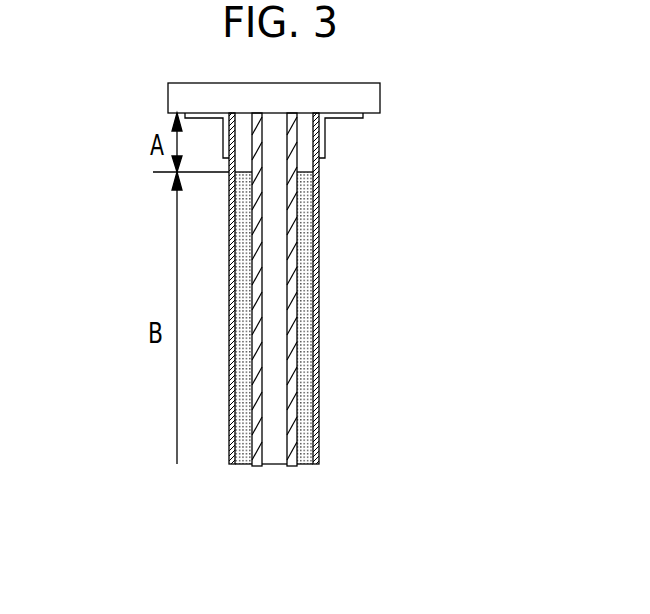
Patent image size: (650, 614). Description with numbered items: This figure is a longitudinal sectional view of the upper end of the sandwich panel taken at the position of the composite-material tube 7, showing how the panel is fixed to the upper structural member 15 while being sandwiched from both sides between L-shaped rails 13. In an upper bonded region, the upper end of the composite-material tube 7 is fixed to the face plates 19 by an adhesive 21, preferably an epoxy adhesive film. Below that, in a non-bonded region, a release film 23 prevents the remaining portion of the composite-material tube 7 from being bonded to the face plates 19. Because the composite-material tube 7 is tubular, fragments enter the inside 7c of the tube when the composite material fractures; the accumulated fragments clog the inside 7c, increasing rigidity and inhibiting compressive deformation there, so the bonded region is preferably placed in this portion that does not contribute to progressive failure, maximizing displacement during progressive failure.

The upper structural member 15 is at (168, 92).
The L-shaped rails 13 is at (323, 135).
The face plates 19 is at (318, 395).
The adhesive 21 is at (303, 163).
The release film 23 is at (310, 310).
The composite-material tube 7 is at (279, 466).
The inside of the tube 7c is at (277, 250).